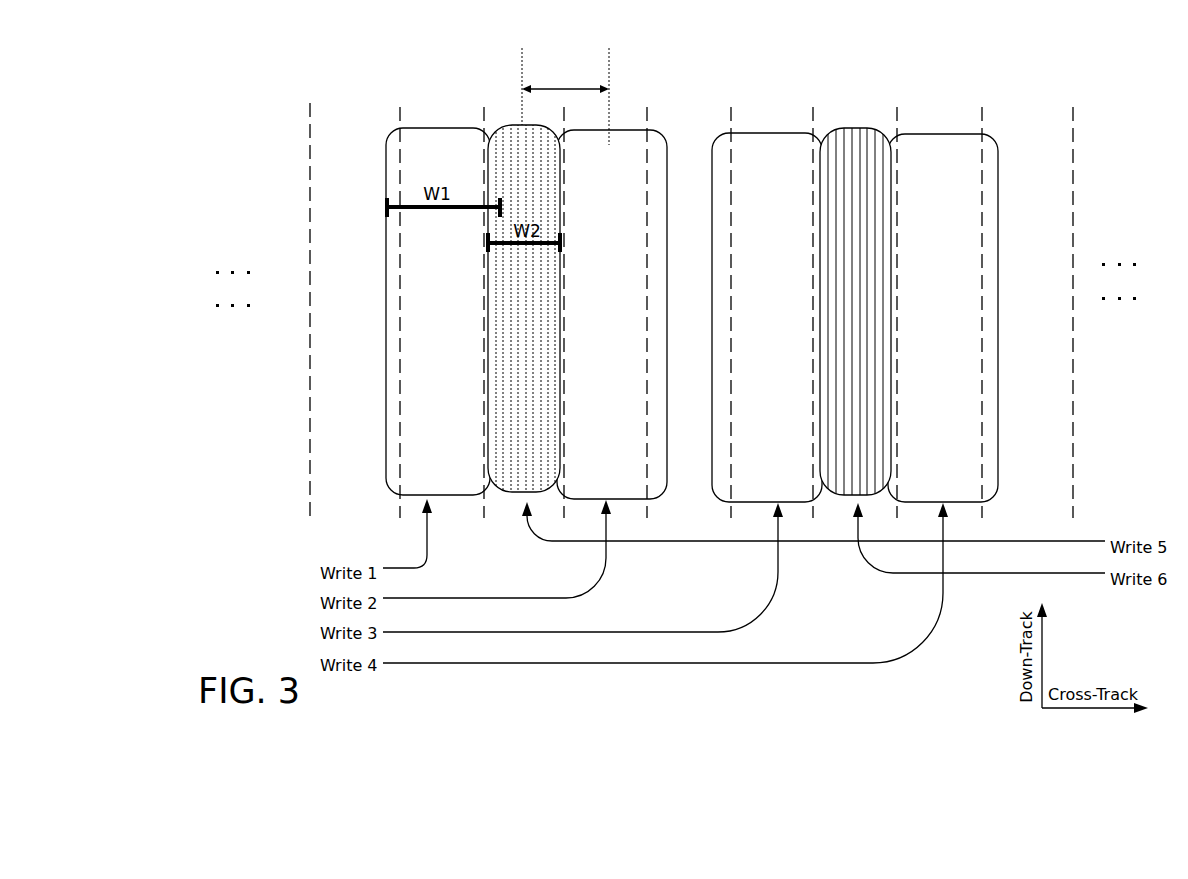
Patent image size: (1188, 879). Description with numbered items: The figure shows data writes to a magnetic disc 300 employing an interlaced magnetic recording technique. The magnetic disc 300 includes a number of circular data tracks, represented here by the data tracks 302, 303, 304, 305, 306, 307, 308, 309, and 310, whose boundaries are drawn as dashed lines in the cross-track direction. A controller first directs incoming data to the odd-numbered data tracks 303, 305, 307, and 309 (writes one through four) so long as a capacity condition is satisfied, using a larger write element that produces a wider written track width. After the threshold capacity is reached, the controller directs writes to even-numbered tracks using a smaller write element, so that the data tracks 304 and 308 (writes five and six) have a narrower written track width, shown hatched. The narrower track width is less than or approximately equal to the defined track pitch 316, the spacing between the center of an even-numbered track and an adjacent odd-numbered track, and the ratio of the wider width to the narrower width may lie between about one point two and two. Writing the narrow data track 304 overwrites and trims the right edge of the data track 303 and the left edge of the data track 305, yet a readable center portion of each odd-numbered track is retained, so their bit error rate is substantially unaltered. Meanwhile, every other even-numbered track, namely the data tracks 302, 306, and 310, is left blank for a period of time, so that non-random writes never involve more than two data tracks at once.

The magnetic disc 300 is at (398, 98).
The data track 302 is at (342, 174).
The data track 303 is at (424, 169).
The data track 304 is at (506, 169).
The data track 305 is at (591, 172).
The data track 306 is at (666, 176).
The data track 307 is at (759, 176).
The data track 308 is at (843, 176).
The data track 309 is at (926, 176).
The data track 310 is at (1025, 176).
The track pitch 316 is at (565, 96).